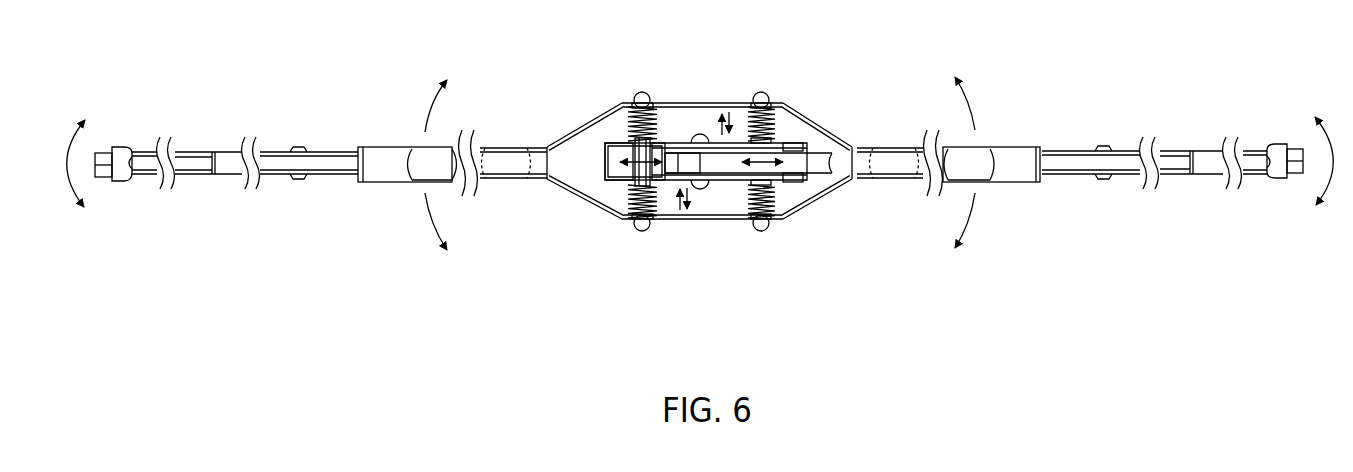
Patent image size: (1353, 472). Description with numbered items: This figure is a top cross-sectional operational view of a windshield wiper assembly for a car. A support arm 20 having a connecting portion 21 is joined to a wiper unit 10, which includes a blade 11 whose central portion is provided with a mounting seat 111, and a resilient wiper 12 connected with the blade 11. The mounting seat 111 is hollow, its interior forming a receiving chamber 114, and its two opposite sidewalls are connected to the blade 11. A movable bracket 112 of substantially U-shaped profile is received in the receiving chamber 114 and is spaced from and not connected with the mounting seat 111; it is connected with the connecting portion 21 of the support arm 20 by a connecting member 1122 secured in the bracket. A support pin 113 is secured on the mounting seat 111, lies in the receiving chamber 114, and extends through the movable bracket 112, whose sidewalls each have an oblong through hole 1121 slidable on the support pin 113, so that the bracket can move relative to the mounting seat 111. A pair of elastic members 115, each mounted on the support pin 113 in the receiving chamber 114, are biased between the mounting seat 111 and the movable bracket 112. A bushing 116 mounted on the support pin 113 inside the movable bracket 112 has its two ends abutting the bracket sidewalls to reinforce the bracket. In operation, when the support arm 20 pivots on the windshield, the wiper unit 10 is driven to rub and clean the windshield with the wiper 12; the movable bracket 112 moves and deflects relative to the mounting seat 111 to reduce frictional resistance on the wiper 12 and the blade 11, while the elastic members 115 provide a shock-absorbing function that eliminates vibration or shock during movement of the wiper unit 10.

The wiper unit 10 is at (1058, 112).
The blade 11 is at (1005, 153).
The resilient wiper 12 is at (1295, 150).
The support arm 20 is at (814, 142).
The connecting portion 21 is at (666, 182).
The mounting seat 111 is at (806, 121).
The movable bracket 112 is at (612, 142).
The through hole 1121 is at (633, 142).
The connecting member 1122 is at (704, 190).
The support pin 113 is at (642, 93).
The receiving chamber 114 is at (700, 108).
The elastic member 115 is at (656, 108).
The bushing 116 is at (610, 148).